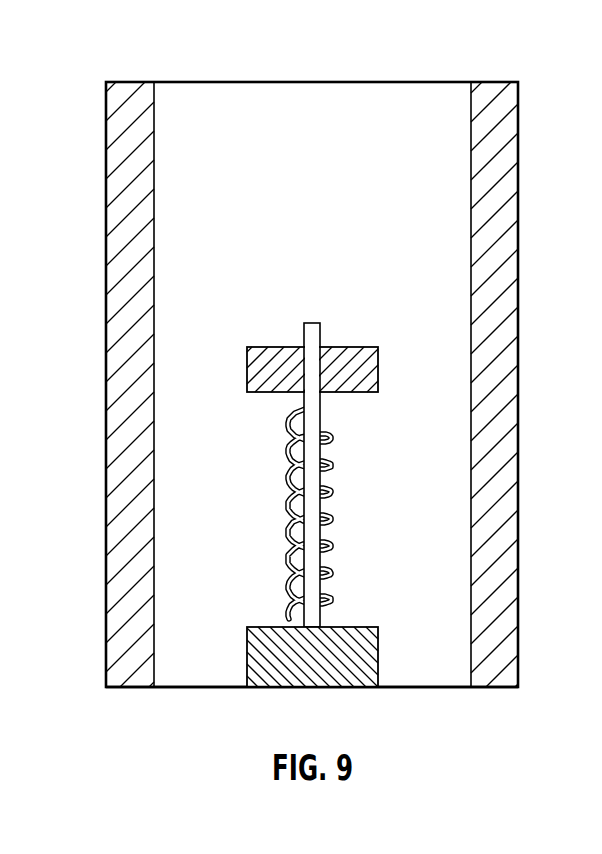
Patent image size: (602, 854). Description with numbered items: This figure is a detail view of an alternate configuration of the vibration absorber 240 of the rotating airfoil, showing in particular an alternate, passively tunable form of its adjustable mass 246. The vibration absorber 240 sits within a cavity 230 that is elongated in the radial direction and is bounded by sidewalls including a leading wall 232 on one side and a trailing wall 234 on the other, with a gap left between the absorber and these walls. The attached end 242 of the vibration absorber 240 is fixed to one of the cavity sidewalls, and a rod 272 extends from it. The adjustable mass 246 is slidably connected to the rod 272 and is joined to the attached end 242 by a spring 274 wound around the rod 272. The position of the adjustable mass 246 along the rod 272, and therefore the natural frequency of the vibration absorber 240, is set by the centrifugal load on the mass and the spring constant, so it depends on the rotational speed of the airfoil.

The cavity 230 is at (234, 145).
The leading wall 232 is at (155, 270).
The trailing wall 234 is at (470, 467).
The vibration absorber 240 is at (249, 714).
The attached end 242 is at (358, 667).
The adjustable mass 246 is at (365, 365).
The rod 272 is at (321, 334).
The spring 274 is at (332, 508).